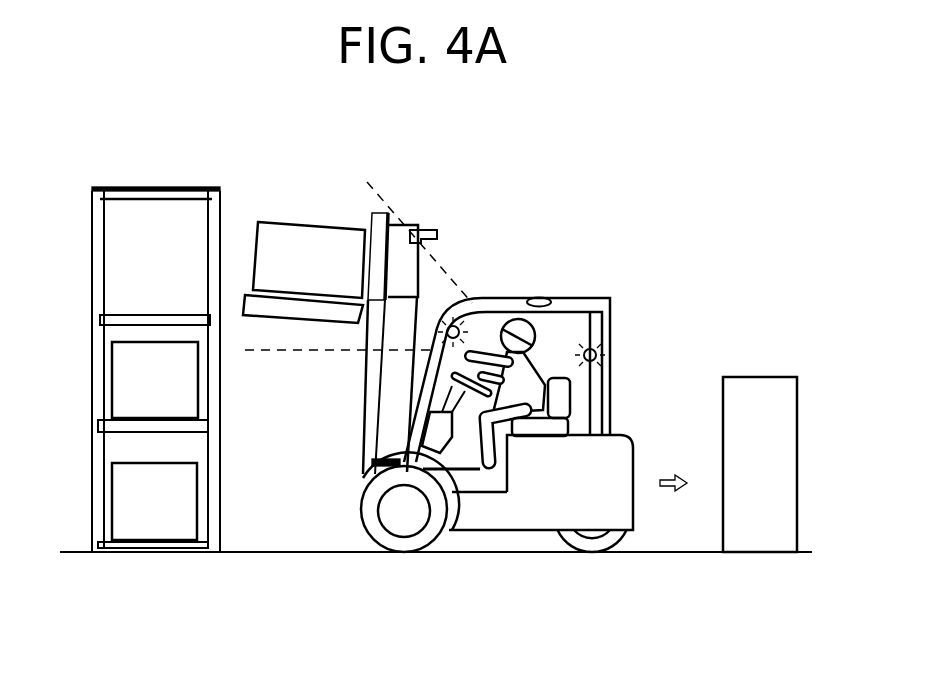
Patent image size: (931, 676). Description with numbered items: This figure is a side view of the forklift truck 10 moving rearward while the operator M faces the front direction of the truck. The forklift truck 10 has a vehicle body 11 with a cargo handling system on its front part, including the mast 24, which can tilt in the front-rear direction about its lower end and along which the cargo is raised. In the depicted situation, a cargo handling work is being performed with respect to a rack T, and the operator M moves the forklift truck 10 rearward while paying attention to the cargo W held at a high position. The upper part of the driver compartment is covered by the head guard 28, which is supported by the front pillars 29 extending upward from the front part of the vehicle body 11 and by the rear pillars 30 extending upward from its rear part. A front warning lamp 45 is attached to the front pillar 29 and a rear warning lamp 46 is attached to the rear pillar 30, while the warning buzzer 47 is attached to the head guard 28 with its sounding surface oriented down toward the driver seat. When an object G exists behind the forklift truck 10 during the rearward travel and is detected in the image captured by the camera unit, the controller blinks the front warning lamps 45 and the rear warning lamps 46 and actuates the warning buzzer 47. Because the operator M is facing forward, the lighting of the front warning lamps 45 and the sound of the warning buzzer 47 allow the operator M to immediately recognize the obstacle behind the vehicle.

The rack T is at (155, 187).
The cargo W is at (315, 222).
The forklift truck 10 is at (617, 240).
The vehicle body 11 is at (535, 532).
The mast 24 is at (368, 384).
The front pillars 29 is at (417, 402).
The head guard 28 is at (518, 298).
The rear pillars 30 is at (611, 405).
The front warning lamps 45 is at (450, 326).
The rear warning lamps 46 is at (598, 352).
The warning buzzer 47 is at (542, 297).
The operator M is at (543, 350).
The object G is at (758, 377).